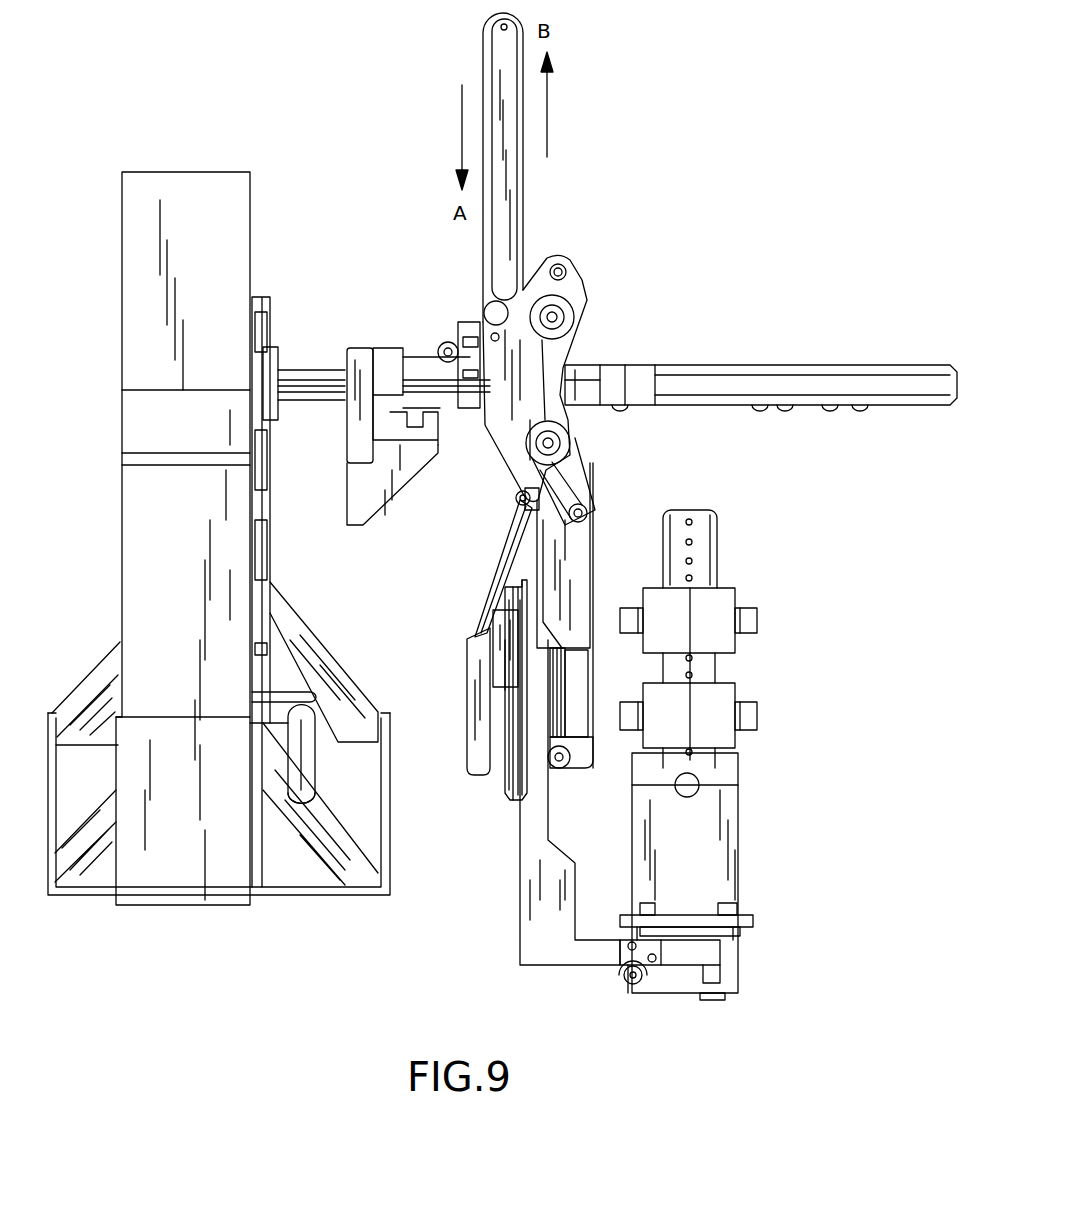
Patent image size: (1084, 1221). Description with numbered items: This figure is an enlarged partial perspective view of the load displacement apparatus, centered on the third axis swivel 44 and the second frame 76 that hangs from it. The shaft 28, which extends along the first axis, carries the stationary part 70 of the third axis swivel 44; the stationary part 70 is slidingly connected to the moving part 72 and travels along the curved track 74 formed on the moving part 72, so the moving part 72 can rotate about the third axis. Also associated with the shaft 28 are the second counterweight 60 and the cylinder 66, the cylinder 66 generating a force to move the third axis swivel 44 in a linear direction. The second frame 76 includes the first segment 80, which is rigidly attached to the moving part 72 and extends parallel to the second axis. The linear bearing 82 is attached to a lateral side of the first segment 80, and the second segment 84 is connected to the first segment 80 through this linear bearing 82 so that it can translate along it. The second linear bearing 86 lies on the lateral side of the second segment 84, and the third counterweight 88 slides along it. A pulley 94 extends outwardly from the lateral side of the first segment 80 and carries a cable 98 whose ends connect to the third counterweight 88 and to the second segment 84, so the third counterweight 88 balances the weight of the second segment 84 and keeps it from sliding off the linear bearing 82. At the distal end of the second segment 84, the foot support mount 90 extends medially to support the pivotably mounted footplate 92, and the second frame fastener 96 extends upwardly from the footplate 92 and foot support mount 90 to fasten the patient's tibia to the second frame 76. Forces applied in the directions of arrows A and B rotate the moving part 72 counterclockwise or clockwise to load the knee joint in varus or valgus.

The shaft 28 is at (300, 368).
The second counterweight 60 is at (347, 348).
The cylinder 66 is at (445, 344).
The third axis swivel 44 is at (553, 205).
The moving part 72 is at (578, 300).
The stationary part 70 is at (495, 432).
The curved track 74 is at (590, 475).
The pulley 94 is at (516, 500).
The cable 98 is at (492, 570).
The third counterweight 88 is at (480, 640).
The second linear bearing 86 is at (507, 800).
The linear bearing 82 is at (565, 695).
The first segment 80 is at (580, 560).
The second segment 84 is at (528, 900).
The foot support mount 90 is at (598, 955).
The footplate 92 is at (755, 920).
The second frame fastener 96 is at (757, 625).
The second frame 76 is at (862, 527).